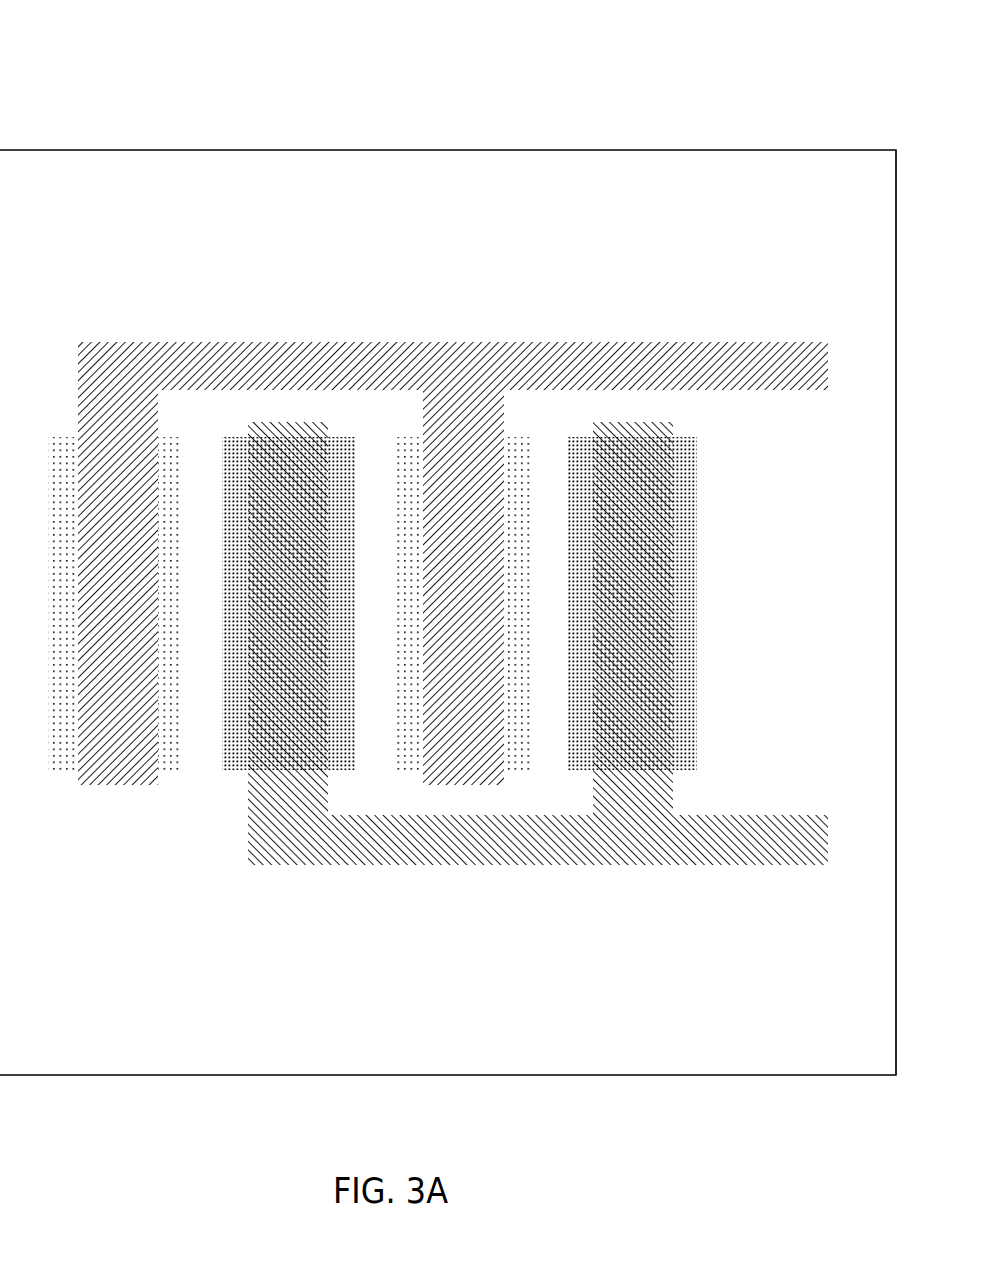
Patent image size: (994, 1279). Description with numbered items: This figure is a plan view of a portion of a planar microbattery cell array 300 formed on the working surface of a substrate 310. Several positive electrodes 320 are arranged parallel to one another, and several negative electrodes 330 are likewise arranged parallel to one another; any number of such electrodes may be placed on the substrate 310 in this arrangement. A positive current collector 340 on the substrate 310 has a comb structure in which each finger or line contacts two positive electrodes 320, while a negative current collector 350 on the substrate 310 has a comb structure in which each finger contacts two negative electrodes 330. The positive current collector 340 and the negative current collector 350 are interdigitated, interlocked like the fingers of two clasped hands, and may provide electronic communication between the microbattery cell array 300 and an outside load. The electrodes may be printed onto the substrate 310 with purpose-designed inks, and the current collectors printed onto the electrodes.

The planar microbattery cell array 300 is at (145, 122).
The substrate 310 is at (838, 1040).
The positive electrodes 320 is at (573, 447).
The negative electrodes 330 is at (515, 662).
The positive current collector 340 is at (650, 818).
The negative current collector 350 is at (685, 368).